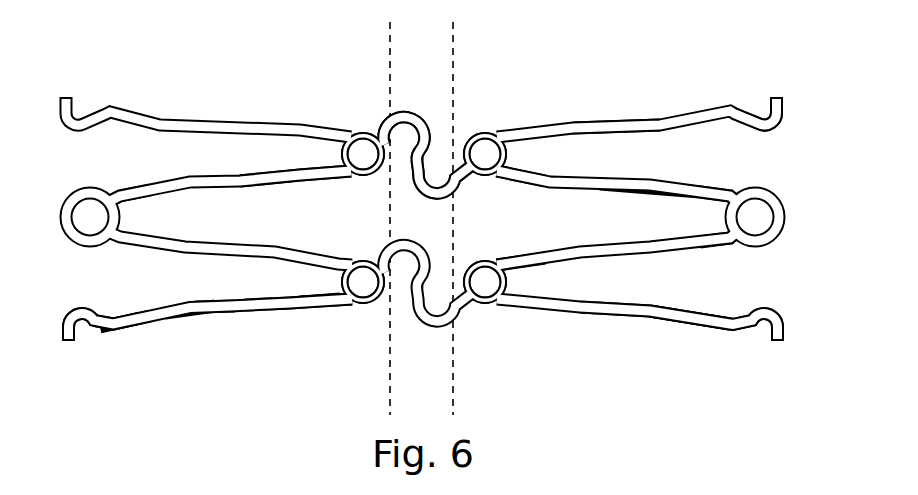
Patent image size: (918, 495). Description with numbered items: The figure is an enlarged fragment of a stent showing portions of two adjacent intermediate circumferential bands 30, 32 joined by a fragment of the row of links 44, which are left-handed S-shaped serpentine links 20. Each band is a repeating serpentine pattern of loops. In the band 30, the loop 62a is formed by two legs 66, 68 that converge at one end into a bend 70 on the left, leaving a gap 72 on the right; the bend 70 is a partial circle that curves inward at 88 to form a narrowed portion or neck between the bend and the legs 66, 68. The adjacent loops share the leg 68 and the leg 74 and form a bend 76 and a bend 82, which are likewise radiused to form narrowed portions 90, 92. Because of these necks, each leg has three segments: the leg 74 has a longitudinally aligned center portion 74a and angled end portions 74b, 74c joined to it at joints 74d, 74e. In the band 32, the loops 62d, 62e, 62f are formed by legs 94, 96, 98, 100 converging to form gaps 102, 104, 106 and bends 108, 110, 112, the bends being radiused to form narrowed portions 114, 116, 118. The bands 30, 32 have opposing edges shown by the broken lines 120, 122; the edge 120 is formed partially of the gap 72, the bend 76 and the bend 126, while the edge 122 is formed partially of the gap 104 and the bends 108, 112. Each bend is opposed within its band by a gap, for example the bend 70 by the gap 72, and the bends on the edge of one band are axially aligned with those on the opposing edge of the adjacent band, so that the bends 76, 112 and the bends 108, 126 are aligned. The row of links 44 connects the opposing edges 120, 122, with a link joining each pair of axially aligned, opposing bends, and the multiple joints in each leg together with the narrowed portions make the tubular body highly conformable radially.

The serpentine links 20 is at (401, 104).
The row of links 44 is at (419, 101).
The bend 126 is at (357, 131).
The bend 108 is at (488, 131).
The intermediate band 30 is at (207, 121).
The intermediate band 32 is at (613, 120).
The loop 62d is at (710, 109).
The narrowed portion 88 is at (112, 189).
The leg 66 is at (217, 178).
The leg 96 is at (584, 176).
The leg 94 is at (625, 133).
The bend 110 is at (734, 186).
The gap 102 is at (774, 165).
The loop 62a is at (306, 182).
The gap 72 is at (372, 227).
The gap 104 is at (464, 235).
The narrowed portion 114 is at (507, 178).
The narrowed portion 118 is at (508, 256).
The leg 98 is at (586, 243).
The loop 62e is at (660, 196).
The leg 68 is at (204, 243).
The bend 70 is at (93, 247).
The narrowed portion 92 is at (114, 317).
The joint 74d is at (192, 301).
The leg 74 is at (240, 301).
The angled end portion 74c is at (292, 297).
The narrowed portion 116 is at (728, 247).
The gap 106 is at (740, 288).
The angled end portion 74b is at (125, 330).
The center portion 74a is at (212, 313).
The joint 74e is at (265, 311).
The narrowed portion 90 is at (322, 307).
The bend 76 is at (366, 304).
The bend 112 is at (482, 304).
The leg 100 is at (596, 301).
The loop 62f is at (615, 316).
The bend 82 is at (88, 338).
The edge 120 is at (389, 397).
The edge 122 is at (454, 408).